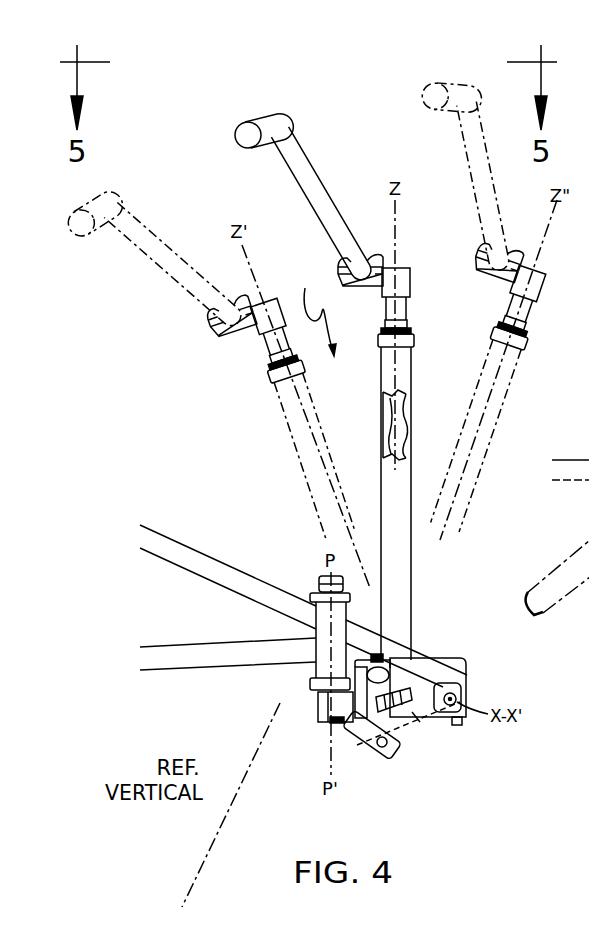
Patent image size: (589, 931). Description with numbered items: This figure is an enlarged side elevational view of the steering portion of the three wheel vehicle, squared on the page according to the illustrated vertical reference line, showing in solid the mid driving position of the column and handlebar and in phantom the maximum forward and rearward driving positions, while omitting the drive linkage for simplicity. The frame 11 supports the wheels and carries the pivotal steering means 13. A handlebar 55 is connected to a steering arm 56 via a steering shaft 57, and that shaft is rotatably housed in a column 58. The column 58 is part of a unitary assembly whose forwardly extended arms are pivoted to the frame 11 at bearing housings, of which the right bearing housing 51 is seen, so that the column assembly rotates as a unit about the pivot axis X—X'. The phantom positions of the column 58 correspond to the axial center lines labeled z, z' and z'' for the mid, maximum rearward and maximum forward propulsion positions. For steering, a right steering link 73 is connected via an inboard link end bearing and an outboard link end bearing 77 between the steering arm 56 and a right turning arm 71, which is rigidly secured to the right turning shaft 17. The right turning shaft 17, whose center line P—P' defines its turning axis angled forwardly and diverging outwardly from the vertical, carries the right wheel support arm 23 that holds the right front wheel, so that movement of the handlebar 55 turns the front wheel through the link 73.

The frame 11 is at (215, 561).
The pivotal steering means 13 is at (313, 310).
The right turning shaft 17 is at (322, 707).
The right wheel support arm 23 is at (362, 732).
The right bearing housing 51 is at (425, 712).
The handlebar 55 is at (335, 210).
The steering arm 56 is at (420, 723).
The steering shaft 57 is at (382, 423).
The column 58 is at (290, 447).
The right turning arm 71 is at (385, 655).
The right steering link 73 is at (432, 680).
The outboard link end bearing 77 is at (410, 685).